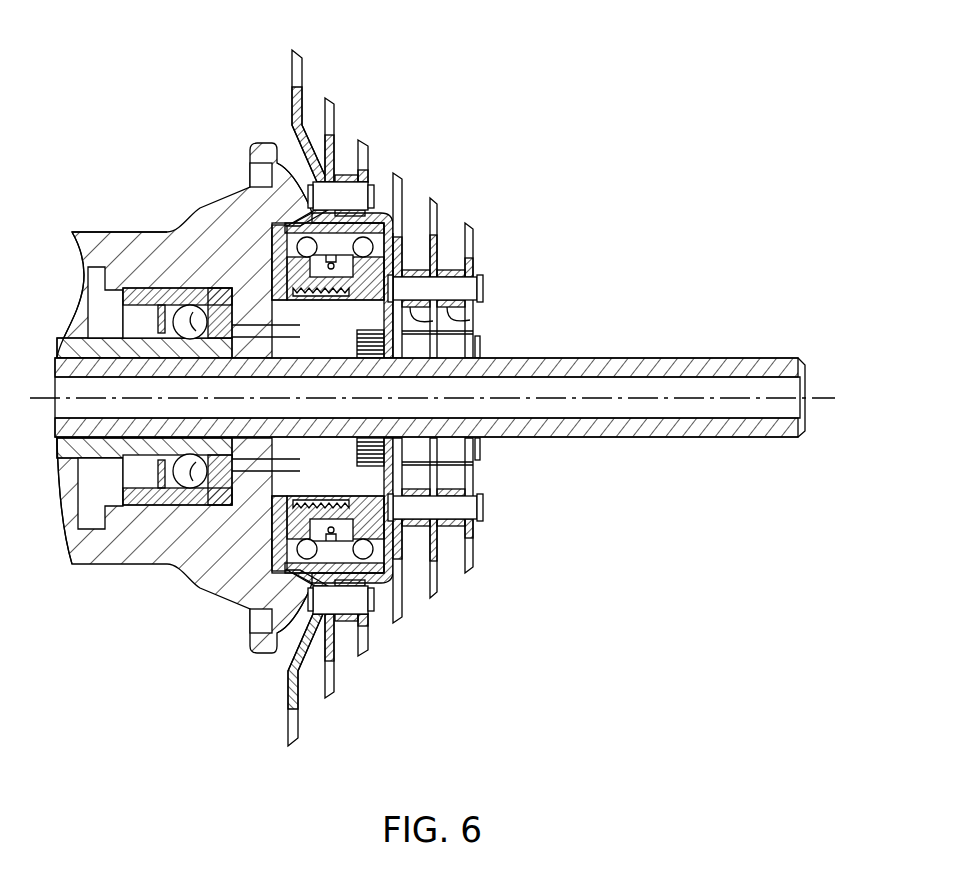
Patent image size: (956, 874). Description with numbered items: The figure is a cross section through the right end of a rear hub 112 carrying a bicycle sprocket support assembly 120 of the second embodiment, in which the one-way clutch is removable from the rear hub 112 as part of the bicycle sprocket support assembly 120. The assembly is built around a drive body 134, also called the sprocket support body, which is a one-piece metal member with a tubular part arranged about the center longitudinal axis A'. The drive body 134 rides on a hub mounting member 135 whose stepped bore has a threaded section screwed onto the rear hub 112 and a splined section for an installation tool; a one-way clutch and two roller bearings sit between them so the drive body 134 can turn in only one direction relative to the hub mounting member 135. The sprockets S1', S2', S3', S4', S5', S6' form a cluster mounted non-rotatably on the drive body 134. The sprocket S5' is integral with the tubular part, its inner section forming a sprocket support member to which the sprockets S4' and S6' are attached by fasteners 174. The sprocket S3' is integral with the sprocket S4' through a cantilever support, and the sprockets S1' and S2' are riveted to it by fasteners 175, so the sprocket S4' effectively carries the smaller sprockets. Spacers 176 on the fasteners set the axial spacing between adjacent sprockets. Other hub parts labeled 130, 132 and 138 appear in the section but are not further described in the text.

The rear hub 112 is at (176, 158).
The bicycle sprocket support assembly 120 is at (488, 111).
The hub 130 is at (57, 348).
The hub body 132 is at (115, 231).
The drive body 134 is at (300, 215).
The hub mounting member 135 is at (273, 267).
The bearing 138 is at (197, 503).
The fasteners 174 is at (308, 200).
The fasteners 175 is at (468, 287).
The spacers 176 is at (322, 180).
The sprocket S1' is at (493, 383).
The sprocket S2' is at (458, 383).
The sprocket S3' is at (422, 384).
The sprocket S4' is at (387, 385).
The sprocket S5' is at (345, 375).
The sprocket S6' is at (315, 379).
The center longitudinal axis A' is at (432, 378).